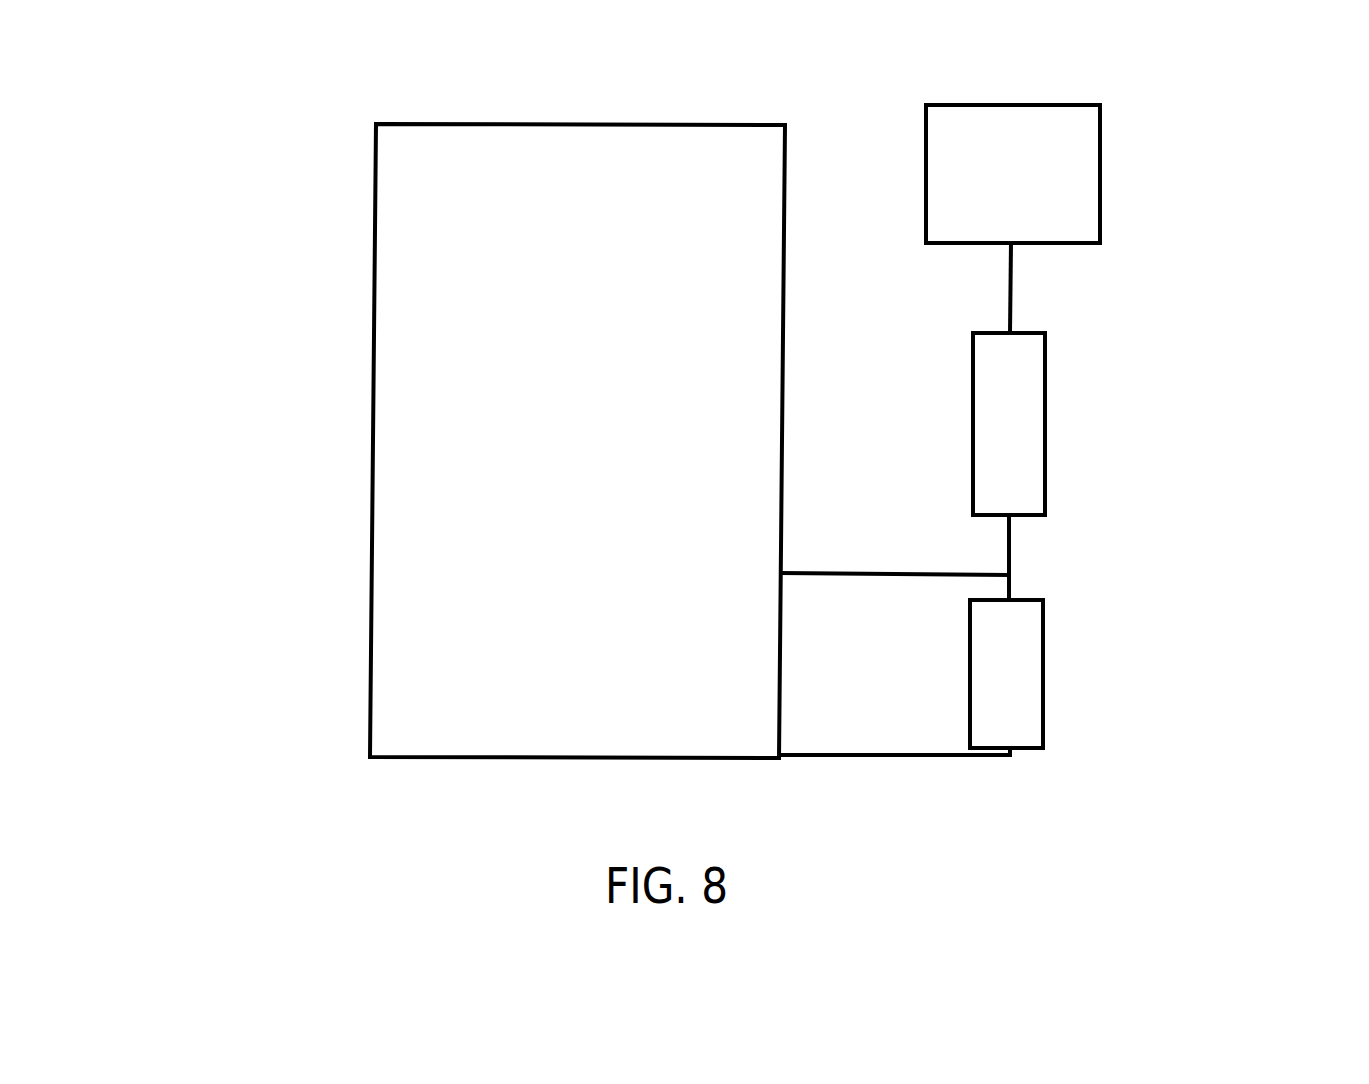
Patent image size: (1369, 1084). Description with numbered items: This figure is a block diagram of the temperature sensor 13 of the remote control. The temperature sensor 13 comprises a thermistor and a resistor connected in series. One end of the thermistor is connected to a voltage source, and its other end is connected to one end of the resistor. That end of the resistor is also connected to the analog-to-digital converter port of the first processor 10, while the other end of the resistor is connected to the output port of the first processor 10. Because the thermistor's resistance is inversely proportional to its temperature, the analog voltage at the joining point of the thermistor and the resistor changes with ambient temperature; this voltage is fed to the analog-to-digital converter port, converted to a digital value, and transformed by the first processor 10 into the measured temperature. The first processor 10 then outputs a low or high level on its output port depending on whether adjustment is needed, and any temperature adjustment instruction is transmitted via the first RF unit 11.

The first processor 10 is at (340, 600).
The temperature sensor 13 is at (1070, 431).
The first RF unit 11 is at (1009, 424).